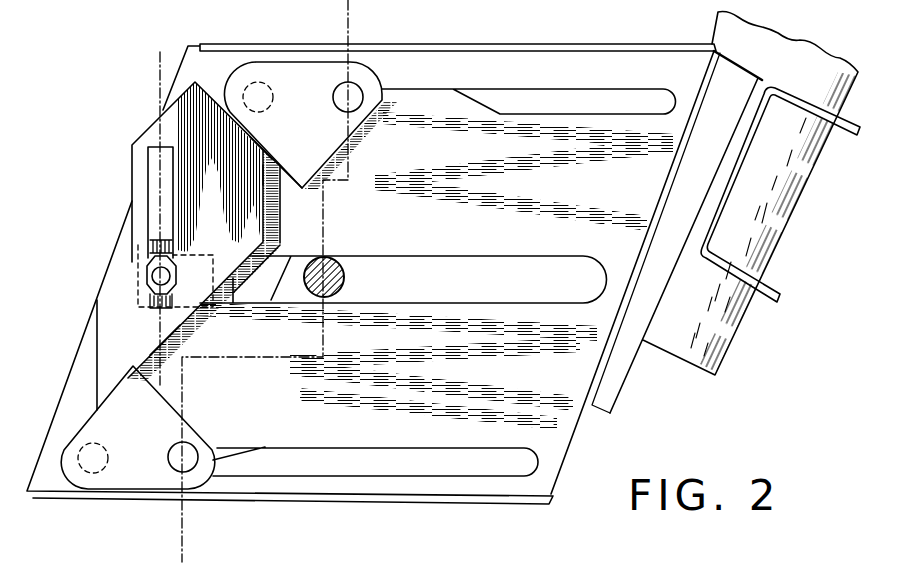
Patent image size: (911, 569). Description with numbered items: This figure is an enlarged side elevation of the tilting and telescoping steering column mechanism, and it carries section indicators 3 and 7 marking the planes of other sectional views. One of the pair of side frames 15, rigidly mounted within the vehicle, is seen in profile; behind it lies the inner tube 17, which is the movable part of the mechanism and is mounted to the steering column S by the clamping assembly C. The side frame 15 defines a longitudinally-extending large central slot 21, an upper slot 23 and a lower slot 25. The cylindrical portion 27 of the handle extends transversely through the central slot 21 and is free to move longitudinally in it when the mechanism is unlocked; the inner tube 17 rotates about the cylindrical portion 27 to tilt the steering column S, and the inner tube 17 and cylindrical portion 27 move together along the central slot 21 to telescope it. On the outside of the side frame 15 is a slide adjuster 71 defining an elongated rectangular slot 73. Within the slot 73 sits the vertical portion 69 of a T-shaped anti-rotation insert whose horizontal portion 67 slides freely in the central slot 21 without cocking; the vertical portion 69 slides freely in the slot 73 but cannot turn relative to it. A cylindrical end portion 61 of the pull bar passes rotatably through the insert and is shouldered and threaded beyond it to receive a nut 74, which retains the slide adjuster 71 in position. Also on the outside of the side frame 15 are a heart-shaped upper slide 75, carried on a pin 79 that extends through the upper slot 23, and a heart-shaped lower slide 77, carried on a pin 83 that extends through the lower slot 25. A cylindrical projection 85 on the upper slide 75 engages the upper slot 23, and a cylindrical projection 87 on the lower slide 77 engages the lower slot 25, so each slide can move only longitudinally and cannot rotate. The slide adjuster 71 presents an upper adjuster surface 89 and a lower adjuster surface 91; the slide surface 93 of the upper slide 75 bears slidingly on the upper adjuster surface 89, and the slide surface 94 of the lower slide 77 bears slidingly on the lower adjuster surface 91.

The side frames 15 is at (568, 70).
The inner tube 17 is at (678, 215).
The central slot 21 is at (514, 262).
The upper slot 23 is at (614, 90).
The lower slot 25 is at (428, 458).
The cylindrical portion 27 is at (326, 257).
The end portions 61 is at (154, 279).
The horizontal portion 67 is at (208, 300).
The vertical portion 69 is at (142, 259).
The slide adjuster 71 is at (140, 164).
The slot 73 is at (150, 211).
The nuts 74 is at (174, 270).
The upper slides 75 is at (301, 71).
The lower slides 77 is at (143, 472).
The pin 79 is at (356, 92).
The pin 83 is at (192, 456).
The cylindrical projection 85 is at (266, 109).
The cylindrical projection 87 is at (94, 455).
The upper adjuster surface 89 is at (262, 144).
The lower adjuster surface 91 is at (173, 357).
The slide surface 93 is at (273, 173).
The slide surface 94 is at (110, 388).
The steering column S is at (774, 49).
The clamping assembly C is at (812, 221).
The section line 3- 3 is at (402, 10).
The section line 7- 7 is at (136, 68).